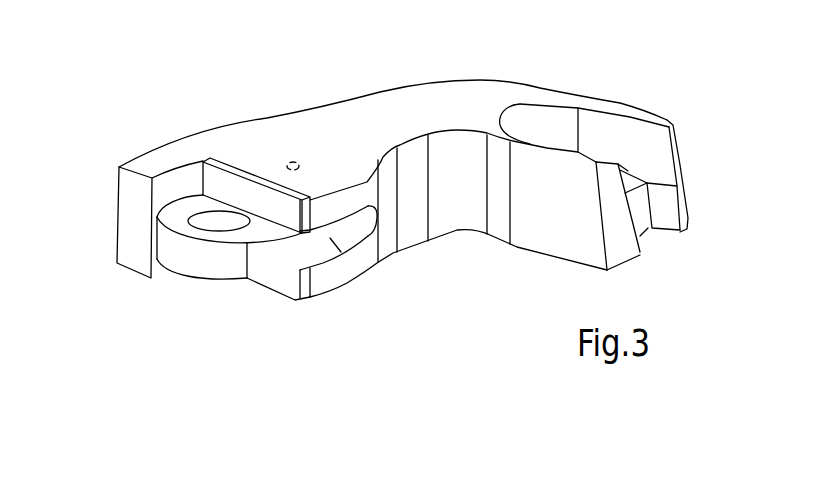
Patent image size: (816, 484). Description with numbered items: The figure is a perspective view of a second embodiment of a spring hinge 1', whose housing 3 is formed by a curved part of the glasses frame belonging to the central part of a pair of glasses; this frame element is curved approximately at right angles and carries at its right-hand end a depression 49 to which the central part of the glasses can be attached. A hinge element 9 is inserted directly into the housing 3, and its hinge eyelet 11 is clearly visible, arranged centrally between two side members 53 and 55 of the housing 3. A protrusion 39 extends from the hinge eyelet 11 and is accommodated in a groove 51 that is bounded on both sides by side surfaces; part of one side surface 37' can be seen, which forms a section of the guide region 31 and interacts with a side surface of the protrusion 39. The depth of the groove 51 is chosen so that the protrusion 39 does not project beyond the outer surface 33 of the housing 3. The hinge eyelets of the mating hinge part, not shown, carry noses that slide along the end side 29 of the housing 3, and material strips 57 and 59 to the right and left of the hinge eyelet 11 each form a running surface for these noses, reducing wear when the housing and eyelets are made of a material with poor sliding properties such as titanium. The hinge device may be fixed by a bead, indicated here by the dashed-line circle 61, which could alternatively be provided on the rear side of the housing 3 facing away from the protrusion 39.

The spring hinge 1' is at (516, 120).
The housing 3 is at (257, 153).
The hinge element 9 is at (221, 297).
The hinge eyelet 11 is at (188, 258).
The end side 29 is at (192, 185).
The guide region 31 is at (355, 196).
The outer surface 33 is at (413, 220).
The side surface 37' is at (404, 304).
The protrusion 39 is at (331, 239).
The depression 49 is at (633, 148).
The groove 51 is at (369, 223).
The side member 53 is at (289, 146).
The side member 55 is at (326, 298).
The material strip 57 is at (237, 195).
The material strip 59 is at (281, 286).
The dashed-line circle 61 is at (296, 162).